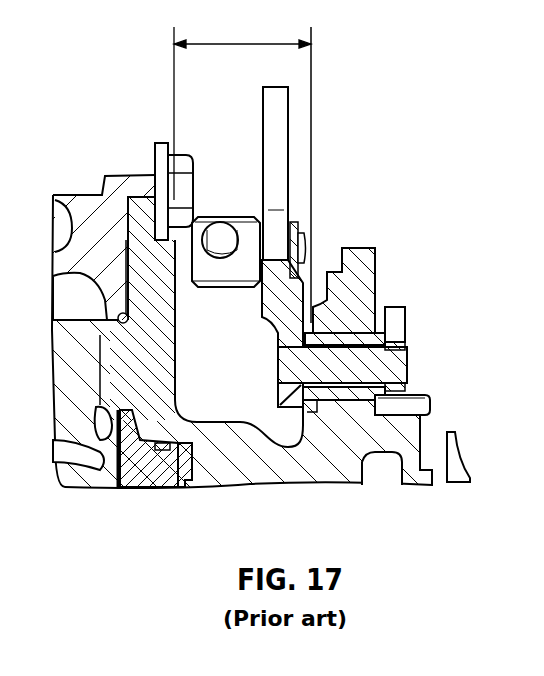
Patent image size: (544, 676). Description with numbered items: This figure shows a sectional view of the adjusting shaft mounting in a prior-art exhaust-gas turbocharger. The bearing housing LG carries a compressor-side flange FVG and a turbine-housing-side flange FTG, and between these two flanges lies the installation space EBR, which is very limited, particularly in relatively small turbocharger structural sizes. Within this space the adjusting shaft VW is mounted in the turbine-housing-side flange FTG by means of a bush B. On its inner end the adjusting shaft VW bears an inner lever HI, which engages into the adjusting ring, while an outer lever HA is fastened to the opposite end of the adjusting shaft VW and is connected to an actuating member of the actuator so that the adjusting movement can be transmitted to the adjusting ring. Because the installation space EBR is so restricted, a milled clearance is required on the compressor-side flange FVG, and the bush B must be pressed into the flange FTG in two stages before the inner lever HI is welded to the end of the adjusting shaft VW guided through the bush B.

The bearing housing LG is at (236, 466).
The compressor-side flange FVG is at (113, 196).
The outer lever HA is at (276, 110).
The installation space EBR is at (248, 44).
The turbine-housing-side flange FTG is at (364, 251).
The bush B is at (338, 334).
The inner lever HI is at (400, 318).
The adjusting shaft VW is at (400, 364).